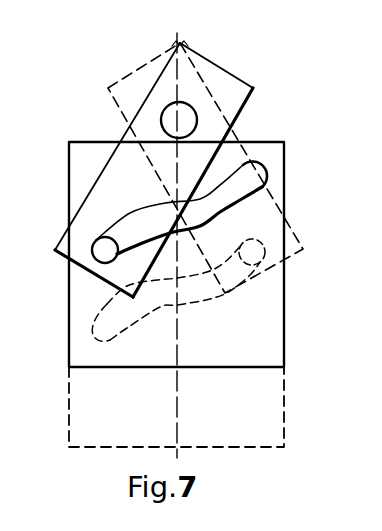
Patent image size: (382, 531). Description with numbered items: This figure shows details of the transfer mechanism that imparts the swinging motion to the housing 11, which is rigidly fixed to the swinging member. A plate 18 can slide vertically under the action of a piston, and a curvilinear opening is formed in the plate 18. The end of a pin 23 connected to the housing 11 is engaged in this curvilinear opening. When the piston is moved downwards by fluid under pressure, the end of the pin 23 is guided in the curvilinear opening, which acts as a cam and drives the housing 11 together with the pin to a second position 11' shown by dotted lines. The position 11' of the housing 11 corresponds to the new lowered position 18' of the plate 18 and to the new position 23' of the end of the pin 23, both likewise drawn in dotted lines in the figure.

The housing 11 is at (154, 170).
The position of the housing 11' is at (218, 168).
The pin 23 is at (146, 212).
The position of the pin end 23' is at (222, 259).
The plate 18 is at (200, 254).
The position of the plate 18' is at (201, 407).